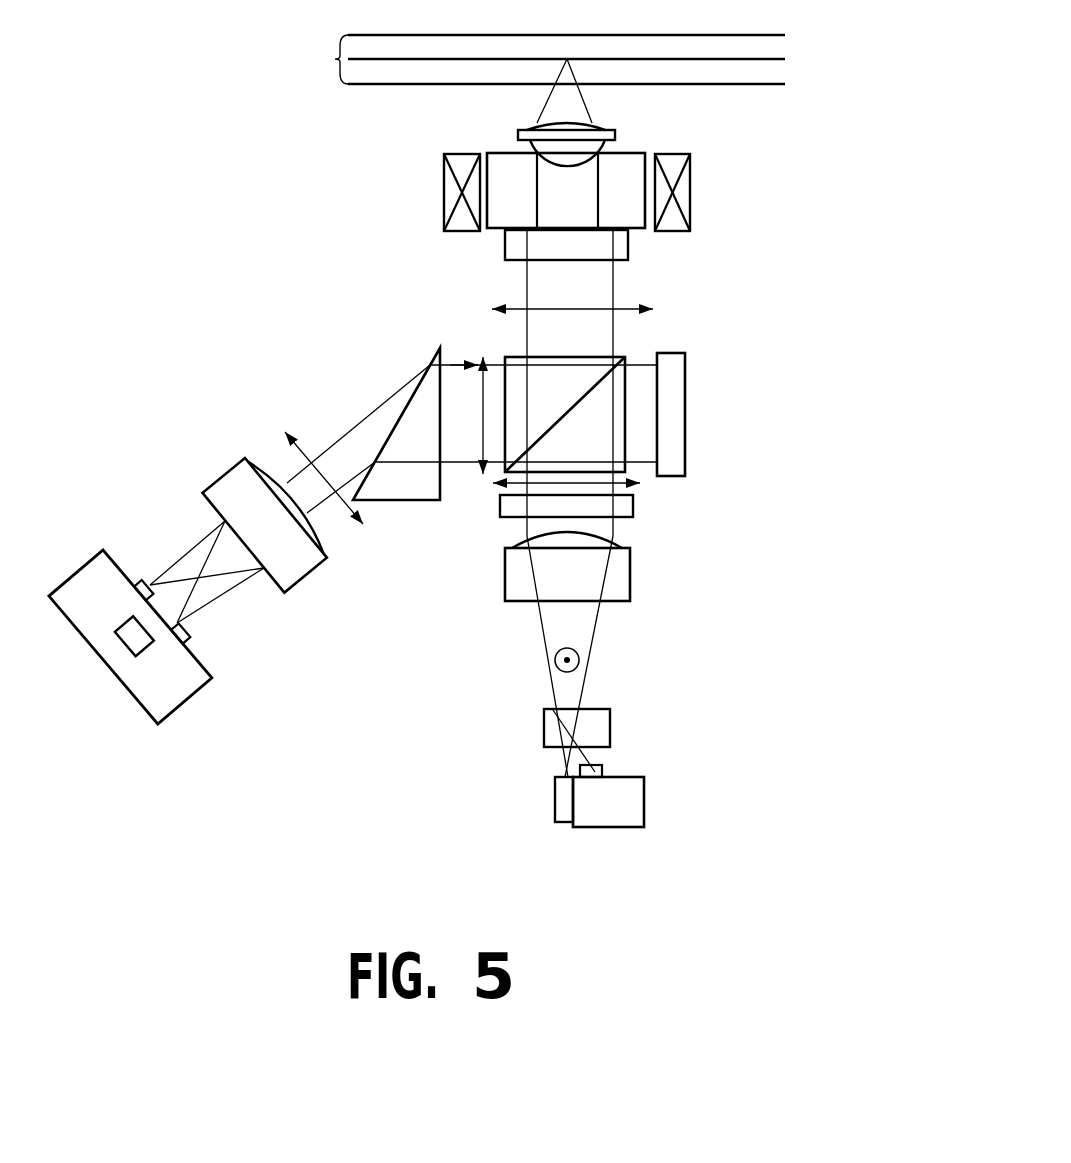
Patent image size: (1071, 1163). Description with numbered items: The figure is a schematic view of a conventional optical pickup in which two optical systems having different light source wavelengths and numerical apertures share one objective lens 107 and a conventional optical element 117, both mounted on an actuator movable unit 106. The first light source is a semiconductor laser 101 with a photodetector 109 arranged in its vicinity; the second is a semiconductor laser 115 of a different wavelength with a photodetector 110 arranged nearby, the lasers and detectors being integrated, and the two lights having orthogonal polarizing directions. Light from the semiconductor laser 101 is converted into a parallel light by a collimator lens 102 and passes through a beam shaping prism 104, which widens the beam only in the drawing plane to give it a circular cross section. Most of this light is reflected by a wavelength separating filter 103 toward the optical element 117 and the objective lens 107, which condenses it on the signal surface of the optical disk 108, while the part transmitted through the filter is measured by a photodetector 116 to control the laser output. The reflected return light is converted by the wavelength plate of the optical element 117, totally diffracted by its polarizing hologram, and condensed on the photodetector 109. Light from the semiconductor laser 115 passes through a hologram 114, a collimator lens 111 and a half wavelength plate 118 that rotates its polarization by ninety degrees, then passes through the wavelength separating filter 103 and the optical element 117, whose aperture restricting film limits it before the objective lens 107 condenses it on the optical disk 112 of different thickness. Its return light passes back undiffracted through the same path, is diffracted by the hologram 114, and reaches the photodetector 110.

The semiconductor laser 101 is at (133, 635).
The collimator lens 102 is at (283, 570).
The wavelength separating filter 103 is at (613, 428).
The beam shaping prism 104 is at (423, 398).
The actuator movable unit 106 is at (520, 165).
The objective lens 107 is at (597, 137).
The optical disk 108 is at (352, 70).
The photodetector 109 is at (188, 637).
The photodetector 110 is at (590, 773).
The collimator lens 111 is at (615, 560).
The optical disk 112 is at (337, 60).
The hologram 114 is at (587, 728).
The semiconductor laser 115 is at (555, 810).
The photodetector 116 is at (680, 433).
The optical element 117 is at (510, 248).
The half wavelength plate 118 is at (625, 505).